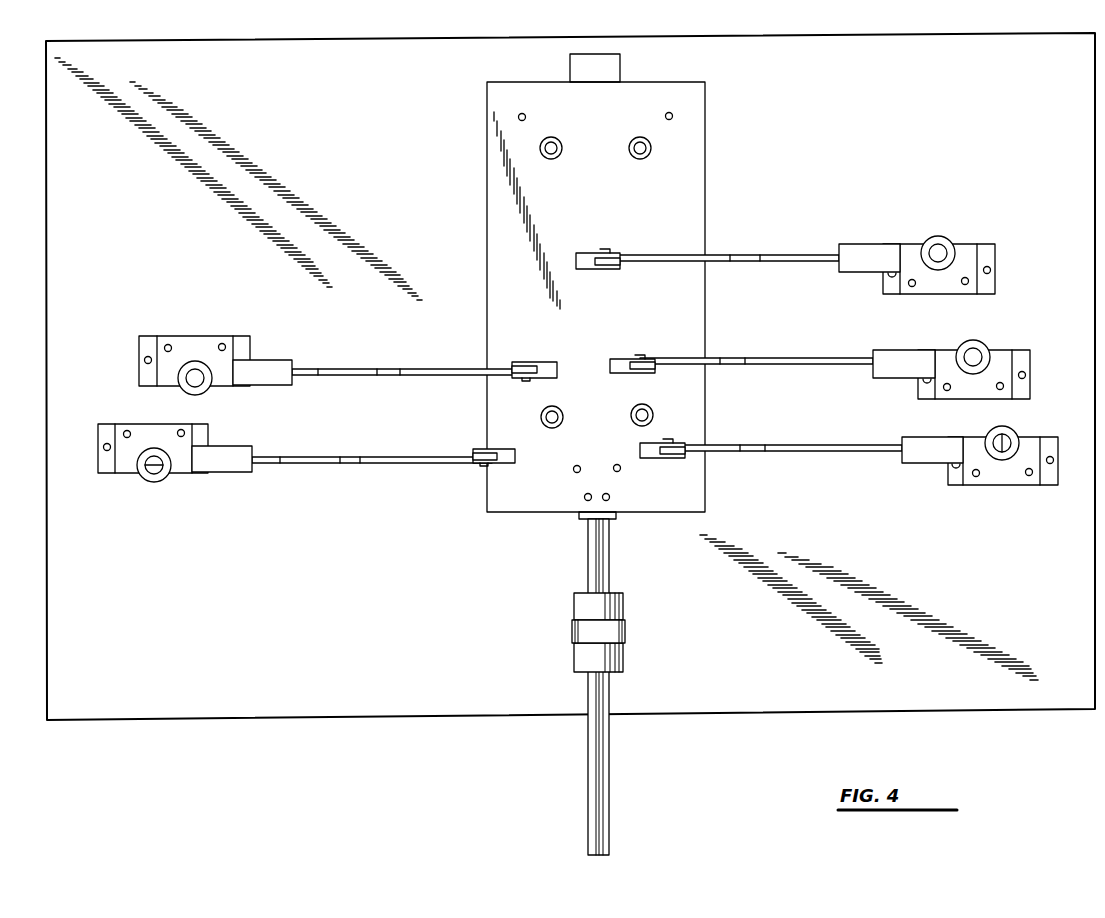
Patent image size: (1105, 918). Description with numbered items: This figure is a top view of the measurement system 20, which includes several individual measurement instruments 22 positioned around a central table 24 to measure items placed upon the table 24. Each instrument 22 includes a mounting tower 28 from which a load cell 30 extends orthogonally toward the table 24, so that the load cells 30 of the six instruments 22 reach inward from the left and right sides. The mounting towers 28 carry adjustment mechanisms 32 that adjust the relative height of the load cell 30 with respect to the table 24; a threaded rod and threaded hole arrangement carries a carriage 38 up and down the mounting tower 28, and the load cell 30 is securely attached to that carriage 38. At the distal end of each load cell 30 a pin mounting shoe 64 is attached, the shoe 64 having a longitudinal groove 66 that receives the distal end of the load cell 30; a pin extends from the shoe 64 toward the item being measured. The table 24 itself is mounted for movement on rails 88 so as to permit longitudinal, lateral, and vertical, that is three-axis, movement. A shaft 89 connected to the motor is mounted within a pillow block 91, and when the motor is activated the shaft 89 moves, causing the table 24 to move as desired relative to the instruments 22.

The measurement system 20 is at (310, 739).
The measurement instrument 22 is at (586, 361).
The table 24 is at (688, 162).
The mounting tower 28 is at (208, 340).
The load cell 30 is at (355, 371).
The adjustment mechanism 32 is at (198, 385).
The carriage 38 is at (264, 368).
The pin mounting shoe 64 is at (579, 358).
The longitudinal groove 66 is at (530, 366).
The rails 88 is at (603, 66).
The shaft 89 is at (600, 783).
The pillow block 91 is at (603, 628).